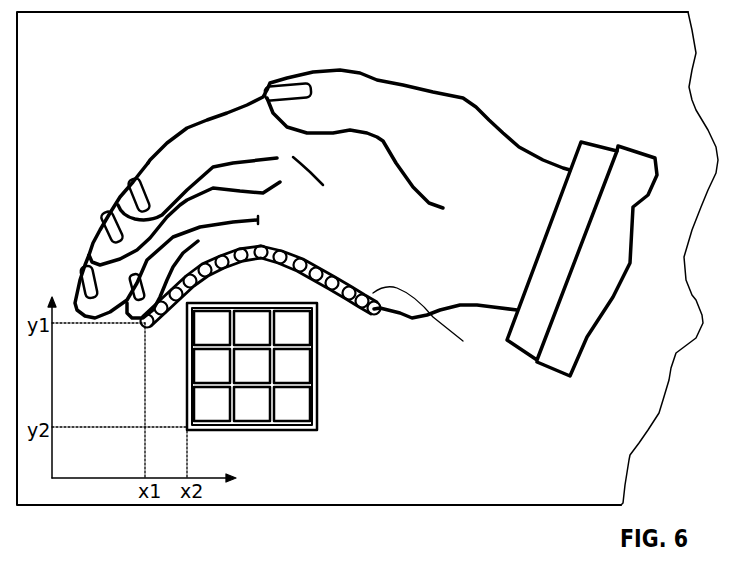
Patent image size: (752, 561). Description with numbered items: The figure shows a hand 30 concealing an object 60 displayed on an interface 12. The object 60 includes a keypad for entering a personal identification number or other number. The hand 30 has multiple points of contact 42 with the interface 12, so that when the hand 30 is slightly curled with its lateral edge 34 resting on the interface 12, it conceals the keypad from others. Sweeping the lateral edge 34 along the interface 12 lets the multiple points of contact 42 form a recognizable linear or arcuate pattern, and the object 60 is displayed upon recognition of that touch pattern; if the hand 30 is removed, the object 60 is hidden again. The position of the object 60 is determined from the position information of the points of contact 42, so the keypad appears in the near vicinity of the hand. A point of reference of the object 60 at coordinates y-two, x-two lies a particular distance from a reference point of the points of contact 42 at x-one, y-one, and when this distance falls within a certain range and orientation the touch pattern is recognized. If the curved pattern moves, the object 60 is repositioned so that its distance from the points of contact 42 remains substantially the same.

The interface 12 is at (68, 81).
The hand 30 is at (479, 132).
The lateral edge 34 is at (433, 322).
The points of contact 42 is at (151, 327).
The object 60 is at (318, 375).